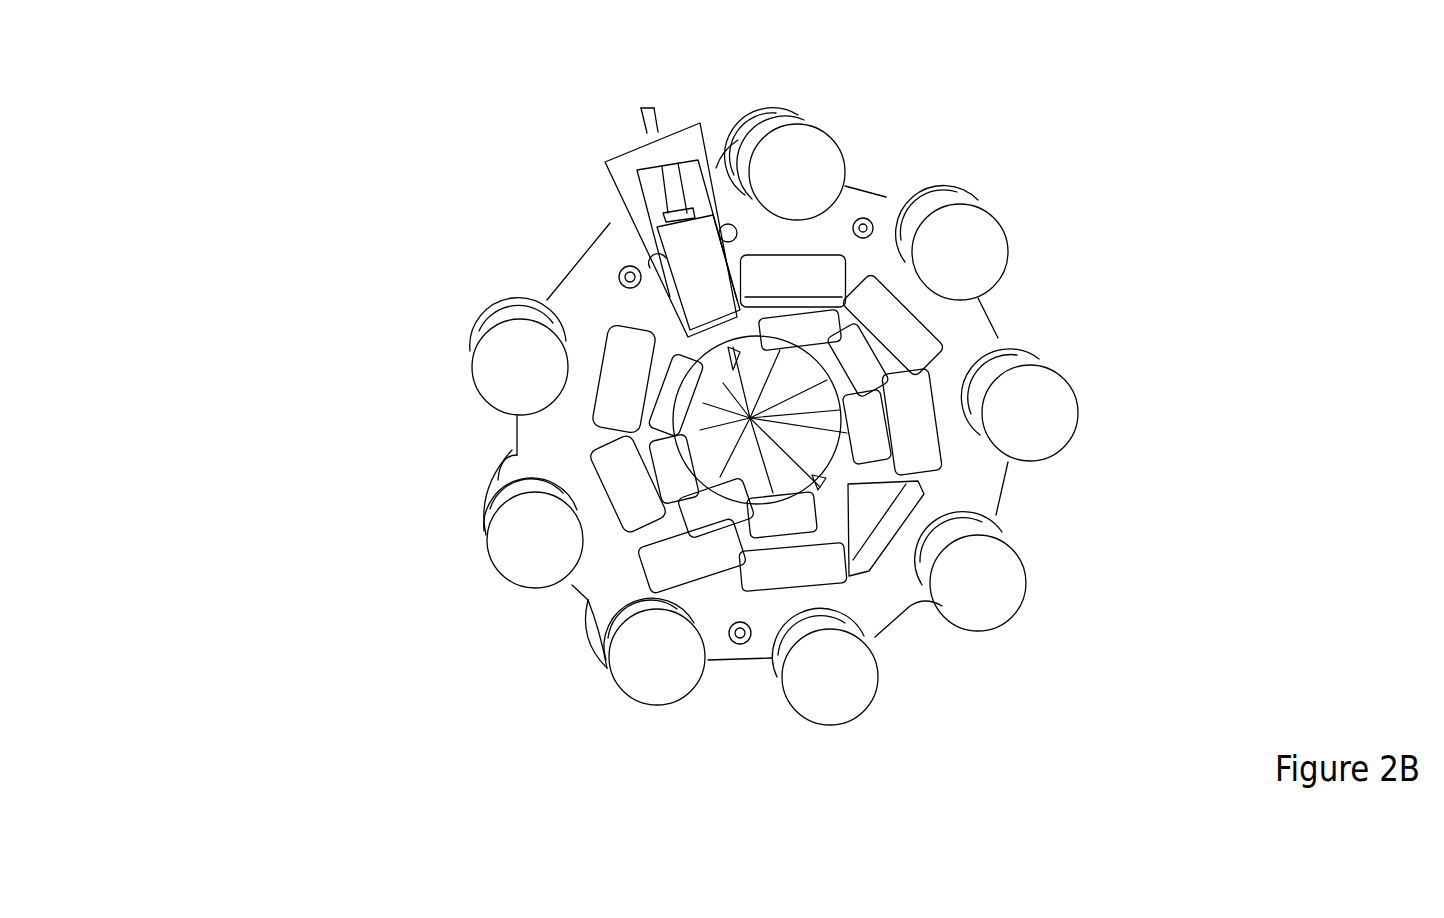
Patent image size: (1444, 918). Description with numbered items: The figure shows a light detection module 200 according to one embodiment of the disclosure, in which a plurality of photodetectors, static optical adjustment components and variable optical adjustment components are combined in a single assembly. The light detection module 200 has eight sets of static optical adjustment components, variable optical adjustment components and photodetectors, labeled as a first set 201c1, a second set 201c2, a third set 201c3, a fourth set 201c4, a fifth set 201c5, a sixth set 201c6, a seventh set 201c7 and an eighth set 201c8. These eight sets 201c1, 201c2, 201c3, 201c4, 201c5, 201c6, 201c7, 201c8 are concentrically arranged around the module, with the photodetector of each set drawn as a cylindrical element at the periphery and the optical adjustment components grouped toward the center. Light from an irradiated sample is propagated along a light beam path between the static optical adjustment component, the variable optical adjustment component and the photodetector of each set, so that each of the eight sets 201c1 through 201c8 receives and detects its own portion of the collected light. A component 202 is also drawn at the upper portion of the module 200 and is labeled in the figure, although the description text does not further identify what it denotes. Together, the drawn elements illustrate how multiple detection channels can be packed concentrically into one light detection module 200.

The light detection module 200 is at (106, 79).
The slide holder 202 is at (683, 258).
The first set of static optical adjustment component, variable optical adjustment co 201c1 is at (860, 717).
The second set of static optical adjustment component, variable optical adjustment c 201c2 is at (812, 138).
The third set of static optical adjustment component, variable optical adjustment co 201c3 is at (643, 705).
The fourth set of static optical adjustment component, variable optical adjustment c 201c4 is at (1003, 236).
The fifth set of static optical adjustment component, variable optical adjustment co 201c5 is at (493, 561).
The sixth set of static optical adjustment component, variable optical adjustment co 201c6 is at (1065, 445).
The seventh set of static optical adjustment component, variable optical adjustment 201c7 is at (465, 359).
The eighth set of static optical adjustment component, variable optical adjustment c 201c8 is at (1004, 620).